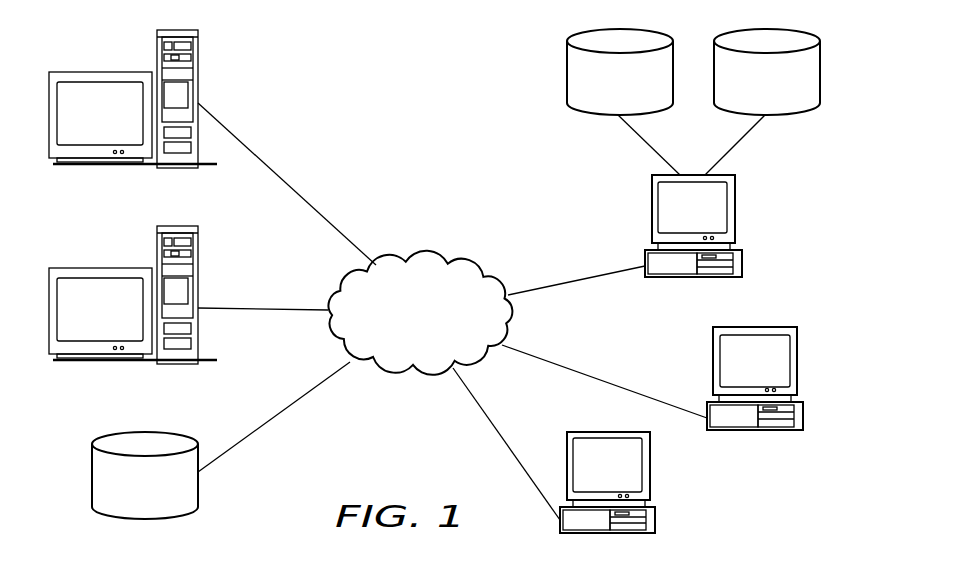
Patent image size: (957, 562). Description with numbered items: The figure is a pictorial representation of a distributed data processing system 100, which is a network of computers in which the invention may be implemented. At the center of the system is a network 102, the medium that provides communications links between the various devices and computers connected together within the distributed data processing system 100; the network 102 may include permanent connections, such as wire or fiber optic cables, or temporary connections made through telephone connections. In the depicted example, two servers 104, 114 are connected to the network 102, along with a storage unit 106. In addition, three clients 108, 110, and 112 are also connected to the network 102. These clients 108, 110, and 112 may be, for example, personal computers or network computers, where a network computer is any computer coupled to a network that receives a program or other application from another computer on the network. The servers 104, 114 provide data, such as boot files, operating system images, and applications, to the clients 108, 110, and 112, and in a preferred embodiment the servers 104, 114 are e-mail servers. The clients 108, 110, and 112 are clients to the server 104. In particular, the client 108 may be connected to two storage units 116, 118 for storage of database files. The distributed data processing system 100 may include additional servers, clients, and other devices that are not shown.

The distributed data processing system 100 is at (328, 133).
The network 102 is at (438, 340).
The server 104 is at (157, 250).
The storage unit 106 is at (92, 476).
The client 108 is at (735, 213).
The client 110 is at (797, 365).
The client 112 is at (650, 470).
The server 114 is at (157, 52).
The storage unit 116 is at (567, 72).
The storage unit 118 is at (820, 72).